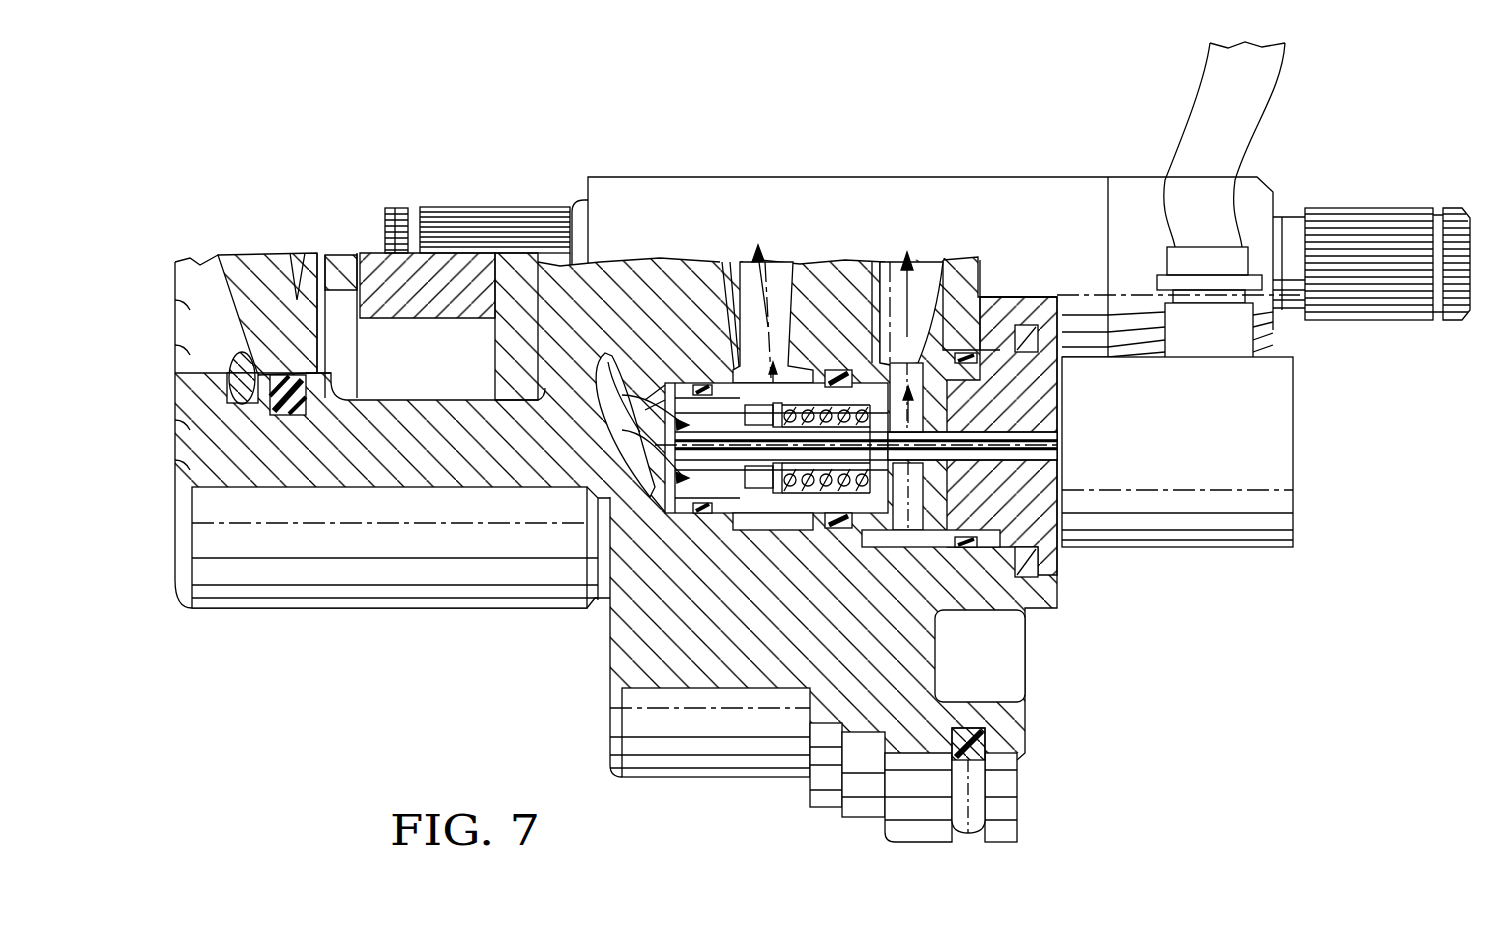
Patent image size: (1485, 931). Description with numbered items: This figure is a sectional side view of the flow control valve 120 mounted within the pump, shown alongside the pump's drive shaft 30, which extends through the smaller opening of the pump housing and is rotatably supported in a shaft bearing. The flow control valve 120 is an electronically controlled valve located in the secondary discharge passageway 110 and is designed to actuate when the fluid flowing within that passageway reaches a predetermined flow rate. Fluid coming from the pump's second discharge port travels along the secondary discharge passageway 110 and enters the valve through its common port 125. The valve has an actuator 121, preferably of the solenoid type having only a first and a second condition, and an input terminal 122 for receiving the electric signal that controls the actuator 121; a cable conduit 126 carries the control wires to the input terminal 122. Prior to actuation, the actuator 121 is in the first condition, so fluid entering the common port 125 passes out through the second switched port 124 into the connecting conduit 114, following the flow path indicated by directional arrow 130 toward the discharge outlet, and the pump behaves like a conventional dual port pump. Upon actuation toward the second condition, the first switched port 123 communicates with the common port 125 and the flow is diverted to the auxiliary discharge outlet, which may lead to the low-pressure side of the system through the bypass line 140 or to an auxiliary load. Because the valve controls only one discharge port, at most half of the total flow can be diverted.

The drive shaft 30 is at (1138, 203).
The secondary discharge passageway 110 is at (612, 408).
The connecting conduit 114 is at (752, 285).
The flow control valve 120 is at (1312, 570).
The actuator 121 is at (1275, 435).
The input terminal 122 is at (1270, 337).
The first switched port 123 is at (935, 277).
The second switched port 124 is at (797, 277).
The common port 125 is at (652, 487).
The cable conduit 126 is at (1263, 100).
The directional arrow 130 is at (782, 272).
The bypass line 140 is at (920, 280).